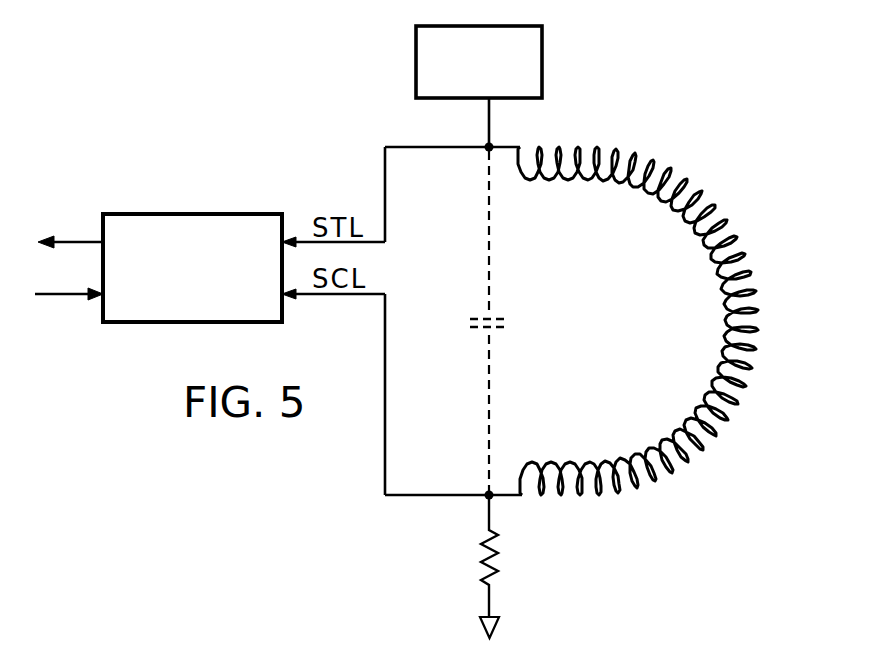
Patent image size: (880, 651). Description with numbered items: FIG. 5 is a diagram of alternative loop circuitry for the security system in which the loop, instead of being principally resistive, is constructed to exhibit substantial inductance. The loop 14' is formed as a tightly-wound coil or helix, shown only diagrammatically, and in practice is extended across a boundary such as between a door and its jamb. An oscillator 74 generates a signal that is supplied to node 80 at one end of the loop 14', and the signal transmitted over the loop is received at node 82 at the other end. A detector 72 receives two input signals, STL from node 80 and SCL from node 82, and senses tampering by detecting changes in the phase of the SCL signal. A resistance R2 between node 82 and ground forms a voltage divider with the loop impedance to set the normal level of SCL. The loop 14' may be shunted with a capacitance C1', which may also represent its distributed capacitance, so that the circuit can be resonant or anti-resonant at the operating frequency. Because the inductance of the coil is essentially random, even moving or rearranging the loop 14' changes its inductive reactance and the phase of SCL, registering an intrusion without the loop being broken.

The oscillator 74 is at (542, 77).
The node 80 is at (486, 151).
The node 82 is at (488, 499).
The detector 72 is at (211, 297).
The loop 14' is at (665, 321).
The capacitance C1' is at (527, 303).
The resistance R2 is at (495, 559).